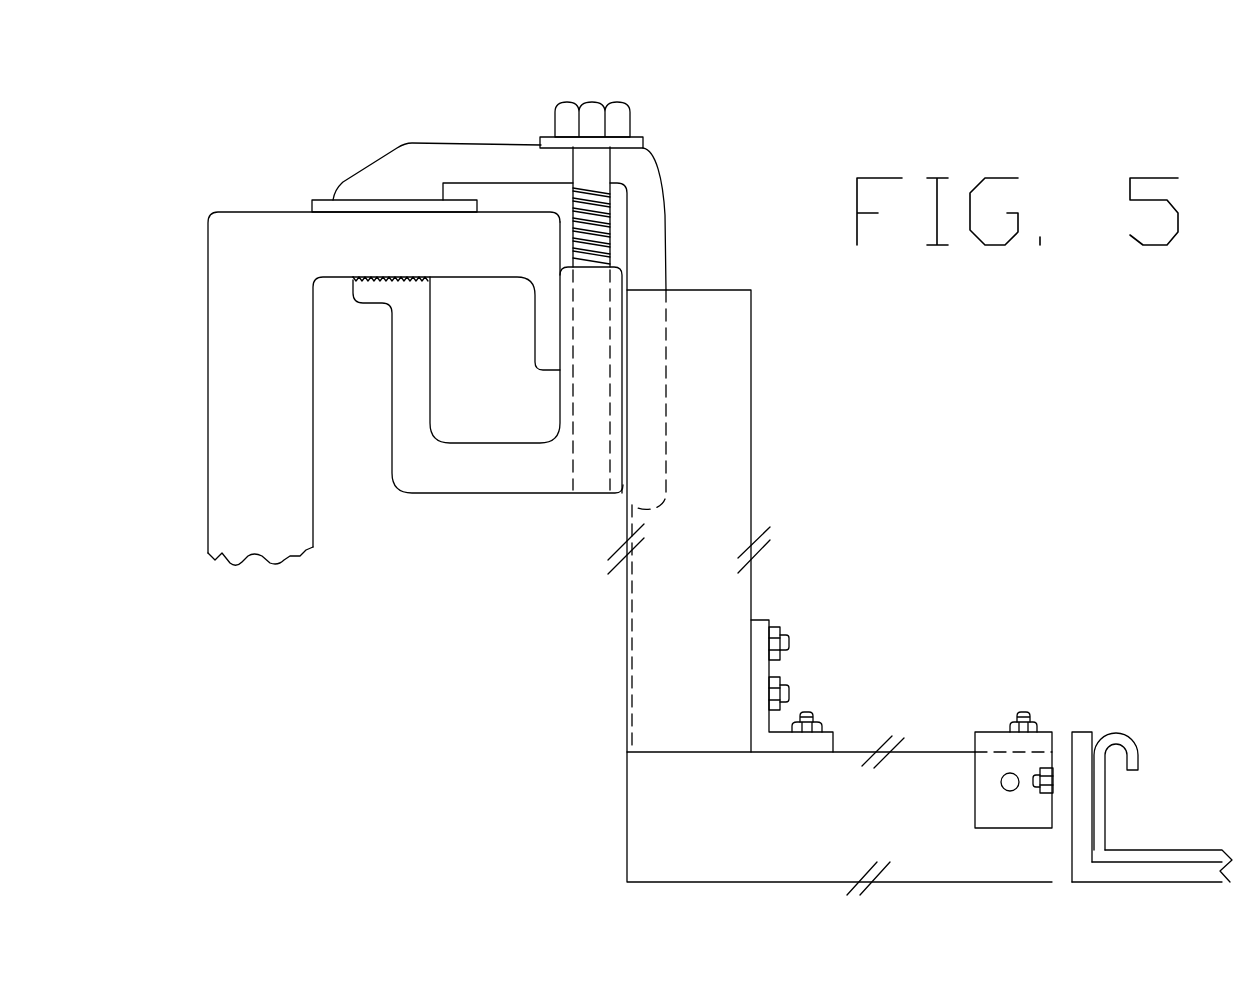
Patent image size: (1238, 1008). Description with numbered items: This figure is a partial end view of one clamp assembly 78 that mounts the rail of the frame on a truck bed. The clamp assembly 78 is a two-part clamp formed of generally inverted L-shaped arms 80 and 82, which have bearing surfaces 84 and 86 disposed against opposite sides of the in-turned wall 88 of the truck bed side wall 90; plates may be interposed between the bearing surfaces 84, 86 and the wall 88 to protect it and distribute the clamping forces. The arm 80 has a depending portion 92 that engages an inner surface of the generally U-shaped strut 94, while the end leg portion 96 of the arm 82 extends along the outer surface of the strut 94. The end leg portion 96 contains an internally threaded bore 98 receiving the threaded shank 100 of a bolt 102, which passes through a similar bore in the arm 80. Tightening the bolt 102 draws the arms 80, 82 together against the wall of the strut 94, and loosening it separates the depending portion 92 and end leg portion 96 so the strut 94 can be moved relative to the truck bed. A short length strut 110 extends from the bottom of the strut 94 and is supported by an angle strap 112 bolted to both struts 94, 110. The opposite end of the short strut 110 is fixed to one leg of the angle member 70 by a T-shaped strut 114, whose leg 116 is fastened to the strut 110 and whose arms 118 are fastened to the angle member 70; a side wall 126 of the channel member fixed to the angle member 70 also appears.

The angle member 70 is at (1130, 870).
The clamp assembly 78 is at (666, 127).
The arm 80 is at (652, 178).
The arm 82 is at (462, 468).
The bearing surface 84 is at (378, 205).
The bearing surface 86 is at (397, 277).
The in-turned wall 88 is at (253, 250).
The truck bed side wall 90 is at (293, 442).
The depending portion 92 is at (657, 343).
The strut 94 is at (713, 542).
The end leg portion 96 is at (605, 462).
The internally threaded bore 98 is at (563, 393).
The threaded shank 100 is at (608, 224).
The bolt 102 is at (590, 102).
The short length strut 110 is at (660, 817).
The angle strap 112 is at (763, 665).
The T-shaped strut 114 is at (987, 783).
The leg 116 is at (995, 757).
The arm 118 is at (1080, 743).
The side wall 126 is at (1117, 735).